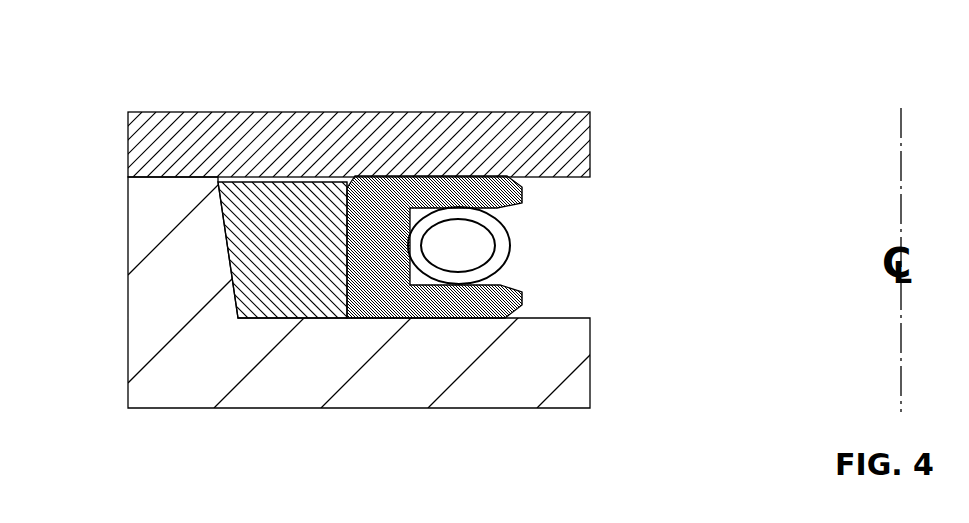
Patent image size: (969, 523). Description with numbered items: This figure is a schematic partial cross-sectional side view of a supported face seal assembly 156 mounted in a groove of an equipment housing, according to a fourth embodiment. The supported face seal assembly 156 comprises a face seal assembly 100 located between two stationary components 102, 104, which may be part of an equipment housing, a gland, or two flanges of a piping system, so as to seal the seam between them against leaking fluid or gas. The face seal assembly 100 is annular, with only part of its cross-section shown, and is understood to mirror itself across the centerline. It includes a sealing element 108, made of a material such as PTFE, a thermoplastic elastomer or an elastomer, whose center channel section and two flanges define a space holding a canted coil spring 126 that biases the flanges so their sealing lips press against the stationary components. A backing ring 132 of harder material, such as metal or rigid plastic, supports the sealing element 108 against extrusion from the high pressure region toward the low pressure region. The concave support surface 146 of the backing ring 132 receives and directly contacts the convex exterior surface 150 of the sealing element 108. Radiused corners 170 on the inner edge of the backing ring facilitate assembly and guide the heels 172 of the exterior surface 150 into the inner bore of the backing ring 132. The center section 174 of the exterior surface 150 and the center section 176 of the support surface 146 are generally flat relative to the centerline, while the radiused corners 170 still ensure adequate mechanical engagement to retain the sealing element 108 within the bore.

The face seal assembly 100 is at (556, 296).
The stationary component 102 is at (437, 143).
The stationary component 104 is at (183, 378).
The sealing element 108 is at (466, 176).
The canted coil spring 126 is at (518, 251).
The backing ring 132 is at (224, 222).
The support surface 146 is at (343, 220).
The exterior surface 150 is at (343, 238).
The supported face seal assembly 156 is at (557, 222).
The radiused corners 170 is at (346, 181).
The heels 172 is at (352, 188).
The center section 174 is at (355, 270).
The center section 176 is at (350, 262).